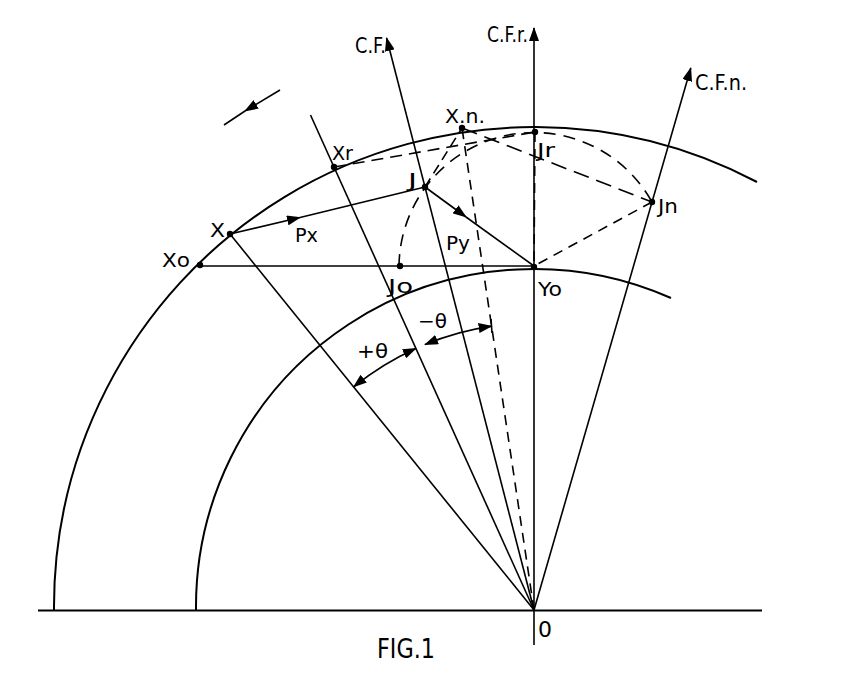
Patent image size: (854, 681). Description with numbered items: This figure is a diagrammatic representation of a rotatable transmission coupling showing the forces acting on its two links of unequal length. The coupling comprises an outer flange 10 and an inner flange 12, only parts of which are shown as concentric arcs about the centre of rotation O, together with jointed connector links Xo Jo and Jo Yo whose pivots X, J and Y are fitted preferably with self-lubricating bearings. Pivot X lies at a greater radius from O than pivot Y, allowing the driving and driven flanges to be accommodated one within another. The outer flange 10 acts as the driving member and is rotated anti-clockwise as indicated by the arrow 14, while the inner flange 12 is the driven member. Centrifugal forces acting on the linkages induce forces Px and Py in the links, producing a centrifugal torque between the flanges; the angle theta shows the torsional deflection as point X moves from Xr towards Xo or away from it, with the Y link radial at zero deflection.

The outer flange 10 is at (72, 492).
The flange 12 is at (222, 493).
The direction of rotation indication 14 is at (252, 98).